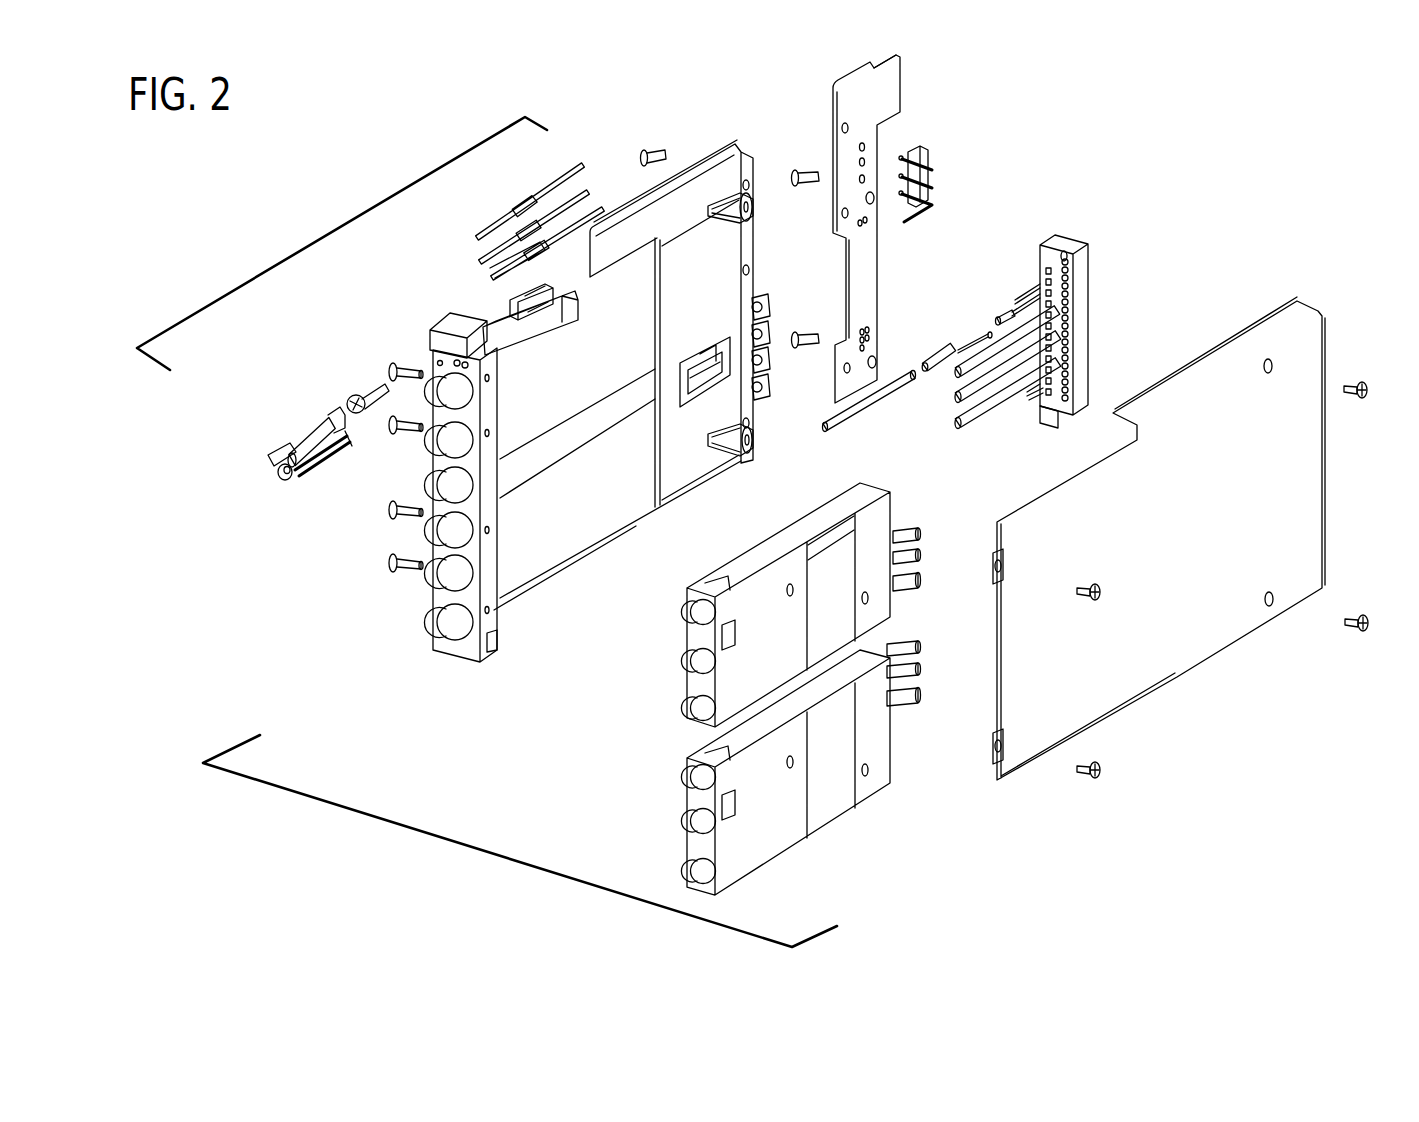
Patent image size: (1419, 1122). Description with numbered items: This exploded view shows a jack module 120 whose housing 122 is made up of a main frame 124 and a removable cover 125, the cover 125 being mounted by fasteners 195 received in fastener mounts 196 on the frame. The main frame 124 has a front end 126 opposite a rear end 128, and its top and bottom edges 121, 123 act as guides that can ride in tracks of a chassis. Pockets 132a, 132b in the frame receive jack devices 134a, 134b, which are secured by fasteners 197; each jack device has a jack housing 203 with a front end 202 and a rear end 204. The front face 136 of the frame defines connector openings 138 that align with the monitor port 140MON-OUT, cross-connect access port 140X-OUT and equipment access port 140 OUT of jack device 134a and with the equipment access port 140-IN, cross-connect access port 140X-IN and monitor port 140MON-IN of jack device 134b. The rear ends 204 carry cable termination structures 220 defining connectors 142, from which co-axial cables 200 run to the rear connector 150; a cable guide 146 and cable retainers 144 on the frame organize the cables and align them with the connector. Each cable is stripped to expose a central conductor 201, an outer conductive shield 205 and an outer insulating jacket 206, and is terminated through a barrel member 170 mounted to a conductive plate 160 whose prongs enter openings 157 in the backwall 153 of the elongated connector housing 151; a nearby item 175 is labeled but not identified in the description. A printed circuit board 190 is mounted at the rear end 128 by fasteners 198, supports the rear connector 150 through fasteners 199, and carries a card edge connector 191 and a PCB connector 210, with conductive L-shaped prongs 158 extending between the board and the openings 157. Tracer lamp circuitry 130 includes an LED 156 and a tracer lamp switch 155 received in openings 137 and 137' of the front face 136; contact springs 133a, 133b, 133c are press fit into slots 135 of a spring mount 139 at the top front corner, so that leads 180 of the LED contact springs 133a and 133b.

The jack module 120 is at (1258, 177).
The top edge 121 is at (720, 150).
The housing 122 is at (540, 872).
The bottom edge 123 is at (680, 505).
The main frame 124 is at (685, 160).
The cover 125 is at (1307, 465).
The front end 126 is at (343, 520).
The rear end 128 is at (1118, 141).
The tracer lamp circuitry 130 is at (330, 236).
The pocket 132a is at (645, 325).
The pocket 132b is at (643, 463).
The contact spring 133a is at (532, 263).
The contact spring 133b is at (481, 261).
The contact spring 133c is at (495, 223).
The jack device 134a is at (877, 591).
The jack device 134b is at (778, 772).
The slots 135 is at (503, 317).
The front face 136 is at (475, 553).
The openings 137 is at (419, 331).
The opening 137' is at (381, 353).
The connector openings 138 is at (463, 473).
The spring mount 139 is at (557, 323).
The monitor port 140MON-OUT is at (703, 612).
The cross-connect access port 140X-OUT is at (703, 662).
The equipment access port 140 OUT is at (703, 710).
The equipment access port 140-IN is at (703, 777).
The cross-connect access port 140X-IN is at (703, 819).
The monitor port 140MON-IN is at (703, 869).
The connectors 142 is at (916, 726).
The cable retainers 144 is at (770, 323).
The cable guide 146 is at (715, 377).
The rear connector 150 is at (1107, 329).
The elongated housing 151 is at (1077, 325).
The backwall 153 is at (1058, 410).
The tracer lamp switch 155 is at (310, 437).
The light emitting diode 156 is at (283, 480).
The openings 157 is at (1055, 290).
The L-shaped prongs 158 is at (1033, 400).
The conductive plate 160 is at (1012, 300).
The barrel member 170 is at (1000, 316).
The wire 175 is at (965, 343).
The leads 180 is at (344, 440).
The printed circuit board 190 is at (916, 132).
The card edge connector 191 is at (880, 77).
The fasteners 195 is at (1358, 382).
The fastener mounts 196 is at (753, 212).
The fasteners 197 is at (392, 555).
The fasteners 198 is at (642, 150).
The fasteners 199 is at (796, 168).
The cables 200 is at (882, 402).
The central conductor 201 is at (920, 375).
The front end 202 is at (615, 670).
The jack housing 203 is at (857, 554).
The rear end 204 is at (918, 495).
The outer conductive shield 205 is at (916, 367).
The outer insulating jacket 206 is at (845, 422).
The PCB connector 210 is at (954, 178).
The cable termination structures 220 is at (915, 693).